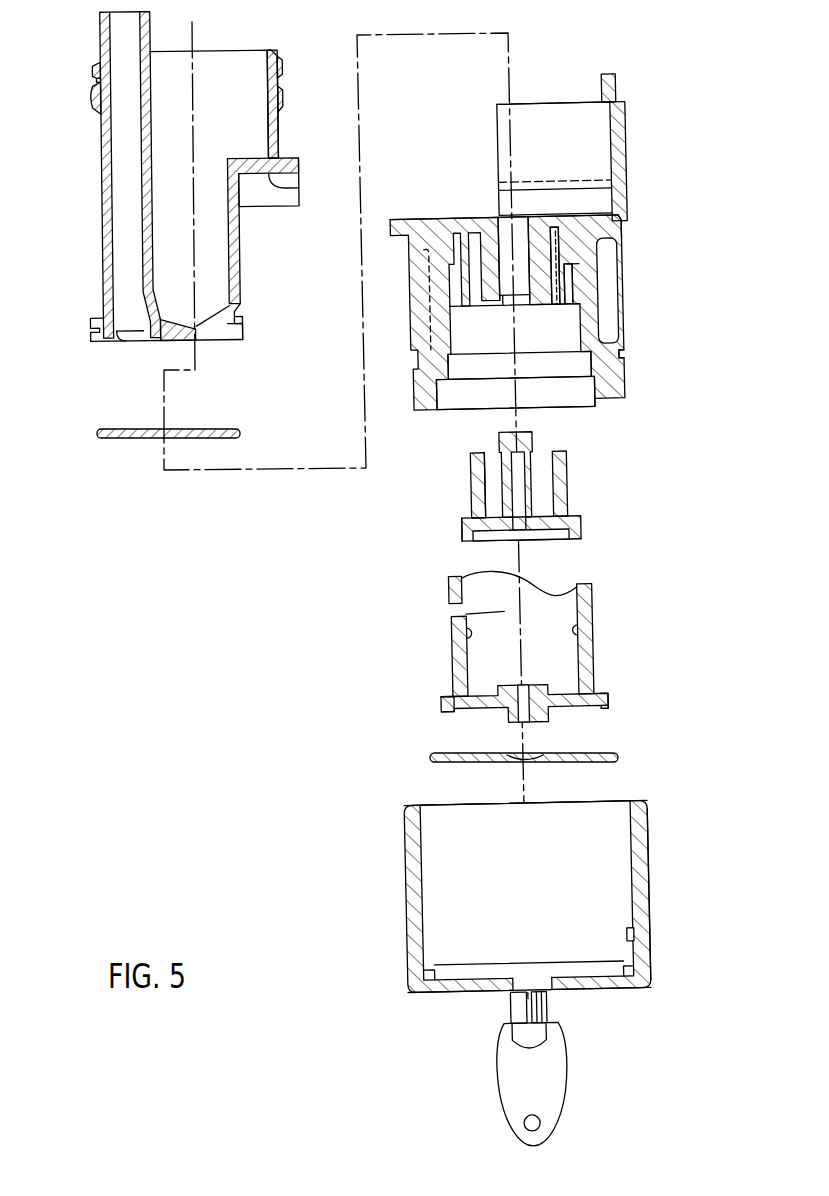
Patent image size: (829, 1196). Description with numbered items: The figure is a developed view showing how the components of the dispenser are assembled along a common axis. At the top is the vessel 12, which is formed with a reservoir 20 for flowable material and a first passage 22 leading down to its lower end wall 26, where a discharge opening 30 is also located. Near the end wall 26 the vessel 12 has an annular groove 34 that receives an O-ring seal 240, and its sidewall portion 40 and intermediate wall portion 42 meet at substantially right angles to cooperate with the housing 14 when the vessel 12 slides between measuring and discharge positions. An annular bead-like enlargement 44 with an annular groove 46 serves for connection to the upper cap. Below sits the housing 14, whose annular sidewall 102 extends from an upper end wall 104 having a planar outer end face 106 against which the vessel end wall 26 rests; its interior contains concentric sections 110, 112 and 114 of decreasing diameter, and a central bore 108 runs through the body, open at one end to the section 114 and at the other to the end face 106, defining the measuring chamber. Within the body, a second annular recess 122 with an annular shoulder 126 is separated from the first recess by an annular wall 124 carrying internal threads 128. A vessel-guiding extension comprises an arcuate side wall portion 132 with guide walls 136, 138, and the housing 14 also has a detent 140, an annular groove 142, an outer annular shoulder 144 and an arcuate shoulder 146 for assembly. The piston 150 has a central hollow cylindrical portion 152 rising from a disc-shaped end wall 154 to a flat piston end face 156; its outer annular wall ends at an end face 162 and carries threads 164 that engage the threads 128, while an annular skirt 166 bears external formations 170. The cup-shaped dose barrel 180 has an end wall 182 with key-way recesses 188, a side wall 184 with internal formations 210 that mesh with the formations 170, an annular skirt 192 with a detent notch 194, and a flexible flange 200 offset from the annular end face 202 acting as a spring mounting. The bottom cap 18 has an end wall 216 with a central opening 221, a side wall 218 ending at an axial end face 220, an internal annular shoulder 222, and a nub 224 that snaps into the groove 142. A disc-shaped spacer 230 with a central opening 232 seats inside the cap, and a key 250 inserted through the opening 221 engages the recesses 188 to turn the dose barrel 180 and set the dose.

The vessel 12 is at (101, 208).
The housing 14 is at (628, 158).
The bottom cap 18 is at (652, 900).
The reservoir 20 is at (230, 117).
The first passage 22 is at (183, 265).
The lower end wall 26 is at (173, 341).
The discharge opening 30 is at (127, 341).
The annular groove 34 is at (88, 328).
The sidewall portion 40 is at (240, 250).
The intermediate wall portion 42 is at (272, 186).
The annular bead-like enlargement 44 is at (94, 68).
The annular groove 46 is at (96, 80).
The annular sidewall 102 is at (623, 297).
The upper end wall 104 is at (620, 240).
The planar outer end face 106 is at (416, 216).
The central bore 108 is at (505, 232).
The interior section 110 is at (446, 396).
The interior section 112 is at (458, 367).
The interior section 114 is at (458, 338).
The second annular recess 122 is at (575, 292).
The annular wall 124 is at (575, 303).
The annular shoulder 126 is at (575, 268).
The internal threads 128 is at (560, 310).
The arcuate side wall portion 132 is at (627, 118).
The guide wall 136 is at (537, 117).
The guide wall 138 is at (557, 195).
The detent 140 is at (590, 408).
The annular groove 142 is at (623, 366).
The outer annular shoulder 144 is at (623, 234).
The arcuate shoulder 146 is at (618, 97).
The piston 150 is at (570, 500).
The central hollow cylindrical portion 152 is at (531, 443).
The end wall 154 is at (520, 530).
The piston end face 156 is at (522, 432).
The end face 162 is at (478, 450).
The threads 164 is at (568, 480).
The annular skirt 166 is at (464, 528).
The formations 170 is at (472, 536).
The dose barrel 180 is at (597, 652).
The end wall 182 is at (578, 707).
The side wall 184 is at (594, 590).
The recesses 188 is at (505, 718).
The annular skirt 192 is at (442, 695).
The detent notch 194 is at (607, 707).
The flange 200 is at (455, 577).
The annular end face 202 is at (553, 610).
The formations 210 is at (450, 630).
The end wall 216 is at (600, 992).
The side wall 218 is at (650, 842).
The axial end face 220 is at (645, 803).
The central opening 221 is at (538, 985).
The internal annular shoulder 222 is at (432, 963).
The nub 224 is at (628, 936).
The spacer 230 is at (445, 753).
The central opening 232 is at (520, 760).
The O-ring seal 240 is at (240, 433).
The key 250 is at (545, 1093).